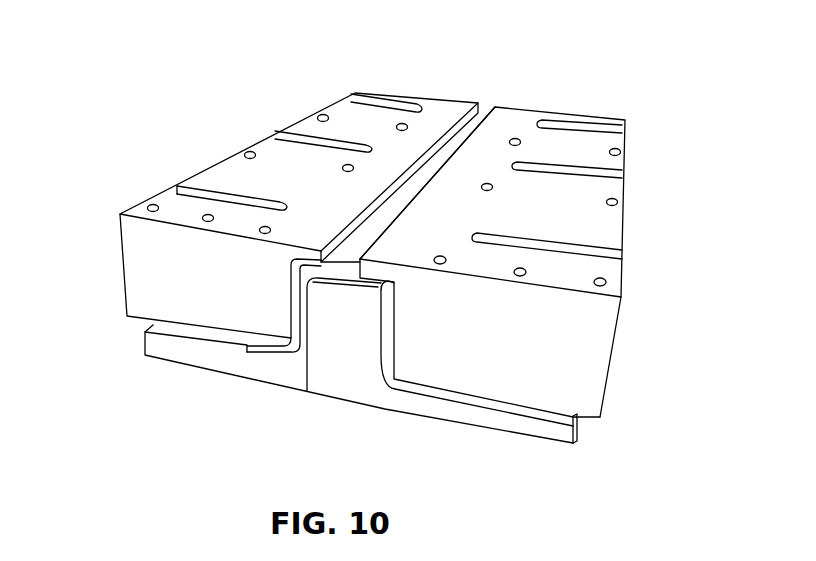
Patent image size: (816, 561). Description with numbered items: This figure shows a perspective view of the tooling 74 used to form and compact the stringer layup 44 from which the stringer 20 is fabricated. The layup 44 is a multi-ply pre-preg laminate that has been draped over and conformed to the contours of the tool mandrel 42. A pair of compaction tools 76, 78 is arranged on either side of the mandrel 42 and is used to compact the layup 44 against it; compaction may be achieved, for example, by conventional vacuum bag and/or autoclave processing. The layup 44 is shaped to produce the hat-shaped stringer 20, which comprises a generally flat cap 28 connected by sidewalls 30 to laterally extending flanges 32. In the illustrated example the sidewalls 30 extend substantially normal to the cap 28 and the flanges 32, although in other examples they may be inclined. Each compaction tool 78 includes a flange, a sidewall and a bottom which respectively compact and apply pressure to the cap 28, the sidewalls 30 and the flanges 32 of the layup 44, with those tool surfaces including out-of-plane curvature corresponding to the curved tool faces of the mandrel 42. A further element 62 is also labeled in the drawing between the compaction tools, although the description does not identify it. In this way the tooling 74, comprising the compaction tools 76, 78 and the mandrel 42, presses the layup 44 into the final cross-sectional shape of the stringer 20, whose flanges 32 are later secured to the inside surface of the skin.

The stringer 20 is at (402, 197).
The cap 28 is at (368, 218).
The sidewalls 30 is at (303, 305).
The flanges 32 is at (252, 348).
The tool mandrel 42 is at (440, 444).
The stringer layup 44 is at (347, 252).
The web 62 is at (330, 333).
The tooling 74 is at (170, 152).
The compaction tool 76 is at (140, 252).
The compaction tool 78 is at (578, 322).